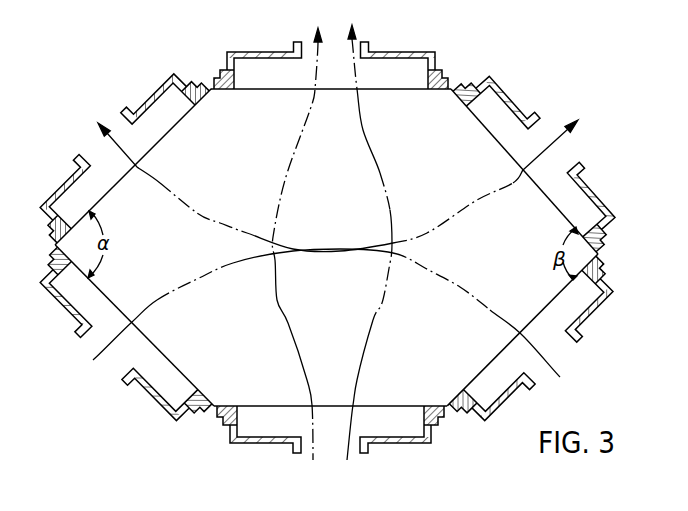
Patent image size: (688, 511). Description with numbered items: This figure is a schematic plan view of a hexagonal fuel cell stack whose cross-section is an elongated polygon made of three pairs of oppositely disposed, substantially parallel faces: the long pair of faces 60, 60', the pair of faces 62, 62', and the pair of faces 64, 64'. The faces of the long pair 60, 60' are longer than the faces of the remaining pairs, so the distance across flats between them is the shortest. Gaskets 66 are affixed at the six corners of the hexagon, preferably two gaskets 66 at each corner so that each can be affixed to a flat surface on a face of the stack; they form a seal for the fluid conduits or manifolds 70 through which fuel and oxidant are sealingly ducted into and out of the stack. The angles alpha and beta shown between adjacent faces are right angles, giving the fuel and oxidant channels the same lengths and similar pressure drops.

The face 60 is at (348, 249).
The face 60' is at (347, 78).
The face 62 is at (291, 342).
The face 62' is at (542, 156).
The face 64 is at (539, 346).
The face 64' is at (300, 153).
The gasket 66 is at (465, 93).
The manifold 70 is at (433, 437).